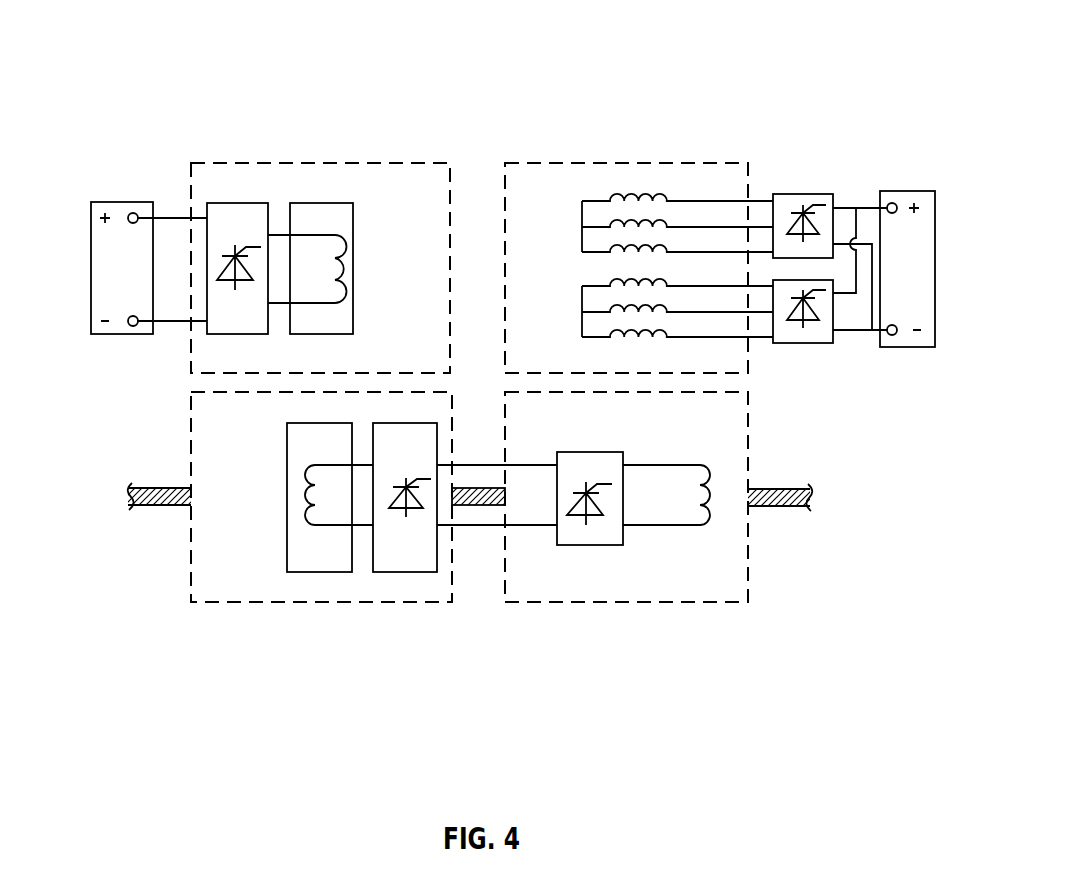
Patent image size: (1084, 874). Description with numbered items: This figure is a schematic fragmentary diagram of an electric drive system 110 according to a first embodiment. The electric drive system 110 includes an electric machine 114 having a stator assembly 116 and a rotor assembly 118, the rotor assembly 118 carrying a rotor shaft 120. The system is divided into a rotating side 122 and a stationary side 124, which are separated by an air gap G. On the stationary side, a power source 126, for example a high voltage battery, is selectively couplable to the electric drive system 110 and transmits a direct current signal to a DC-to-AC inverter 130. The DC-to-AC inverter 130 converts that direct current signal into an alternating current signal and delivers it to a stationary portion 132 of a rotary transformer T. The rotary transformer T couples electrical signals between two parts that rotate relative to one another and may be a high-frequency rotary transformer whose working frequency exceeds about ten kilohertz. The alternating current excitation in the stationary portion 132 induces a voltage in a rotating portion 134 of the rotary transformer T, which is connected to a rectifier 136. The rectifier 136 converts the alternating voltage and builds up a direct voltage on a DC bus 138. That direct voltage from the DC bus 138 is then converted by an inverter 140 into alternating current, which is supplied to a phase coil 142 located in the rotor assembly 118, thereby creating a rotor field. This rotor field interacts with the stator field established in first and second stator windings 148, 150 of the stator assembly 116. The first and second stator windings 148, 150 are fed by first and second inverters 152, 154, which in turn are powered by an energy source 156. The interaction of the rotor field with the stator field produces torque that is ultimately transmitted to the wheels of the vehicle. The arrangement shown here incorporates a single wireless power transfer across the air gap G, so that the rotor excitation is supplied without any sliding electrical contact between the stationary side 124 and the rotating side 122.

The electric drive system 110 is at (247, 63).
The electric machine 114 is at (690, 106).
The stator assembly 116 is at (676, 163).
The rotor assembly 118 is at (752, 565).
The rotor shaft 120 is at (160, 505).
The rotating side 122 is at (150, 368).
The stationary side 124 is at (150, 405).
The power source 126 is at (108, 202).
The DC-to-AC inverter 130 is at (240, 203).
The stationary portion of the rotary transformer 132 is at (326, 197).
The rotating portion of the rotary transformer 134 is at (287, 455).
The rectifier 136 is at (408, 572).
The DC bus 138 is at (477, 585).
The inverter 140 is at (590, 545).
The phase coil 142 is at (722, 471).
The first stator winding 148 is at (620, 188).
The second stator winding 150 is at (630, 338).
The first inverter 152 is at (803, 194).
The second inverter 154 is at (803, 343).
The energy source 156 is at (895, 191).
The air gap G is at (150, 382).
The rotary transformer T is at (363, 285).